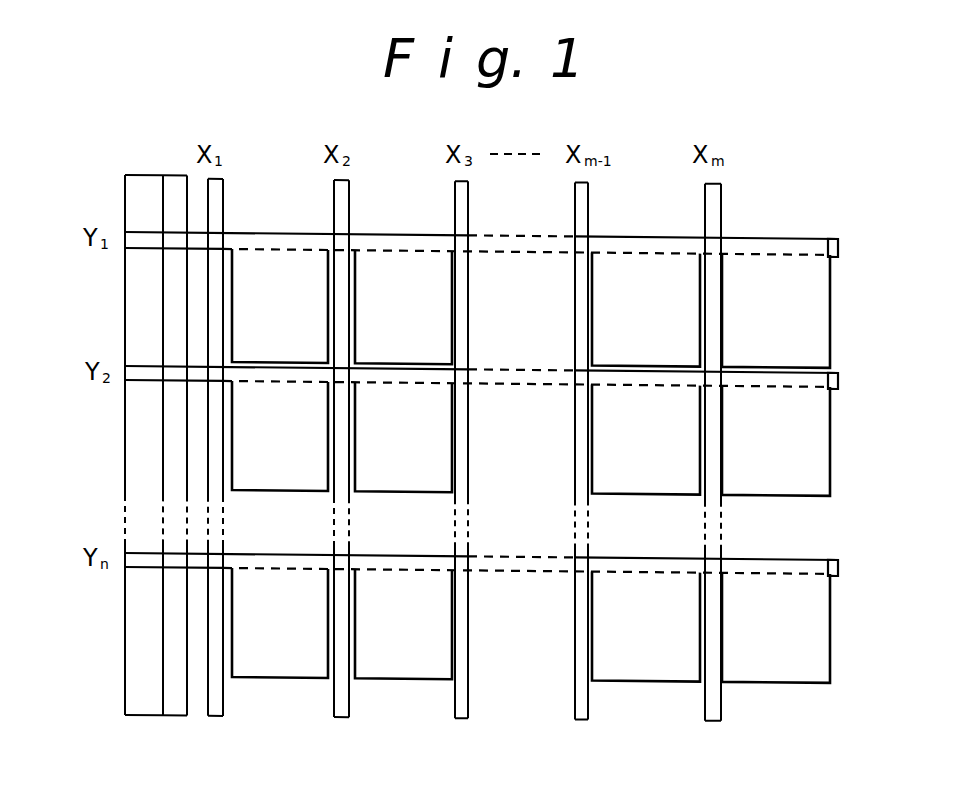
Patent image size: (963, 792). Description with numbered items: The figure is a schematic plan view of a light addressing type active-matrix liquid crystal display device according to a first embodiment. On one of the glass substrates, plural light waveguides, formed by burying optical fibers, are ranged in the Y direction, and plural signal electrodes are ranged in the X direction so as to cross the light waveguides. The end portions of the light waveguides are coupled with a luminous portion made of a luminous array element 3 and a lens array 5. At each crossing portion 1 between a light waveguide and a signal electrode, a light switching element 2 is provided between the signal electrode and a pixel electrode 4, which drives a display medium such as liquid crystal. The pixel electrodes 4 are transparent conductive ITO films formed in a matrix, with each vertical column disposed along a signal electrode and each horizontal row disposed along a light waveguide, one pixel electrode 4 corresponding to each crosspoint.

The crossing portion 1 is at (208, 372).
The light switching element 2 is at (98, 530).
The luminous array element 3 is at (151, 712).
The pixel electrode 4 is at (281, 669).
The lens array 5 is at (177, 712).